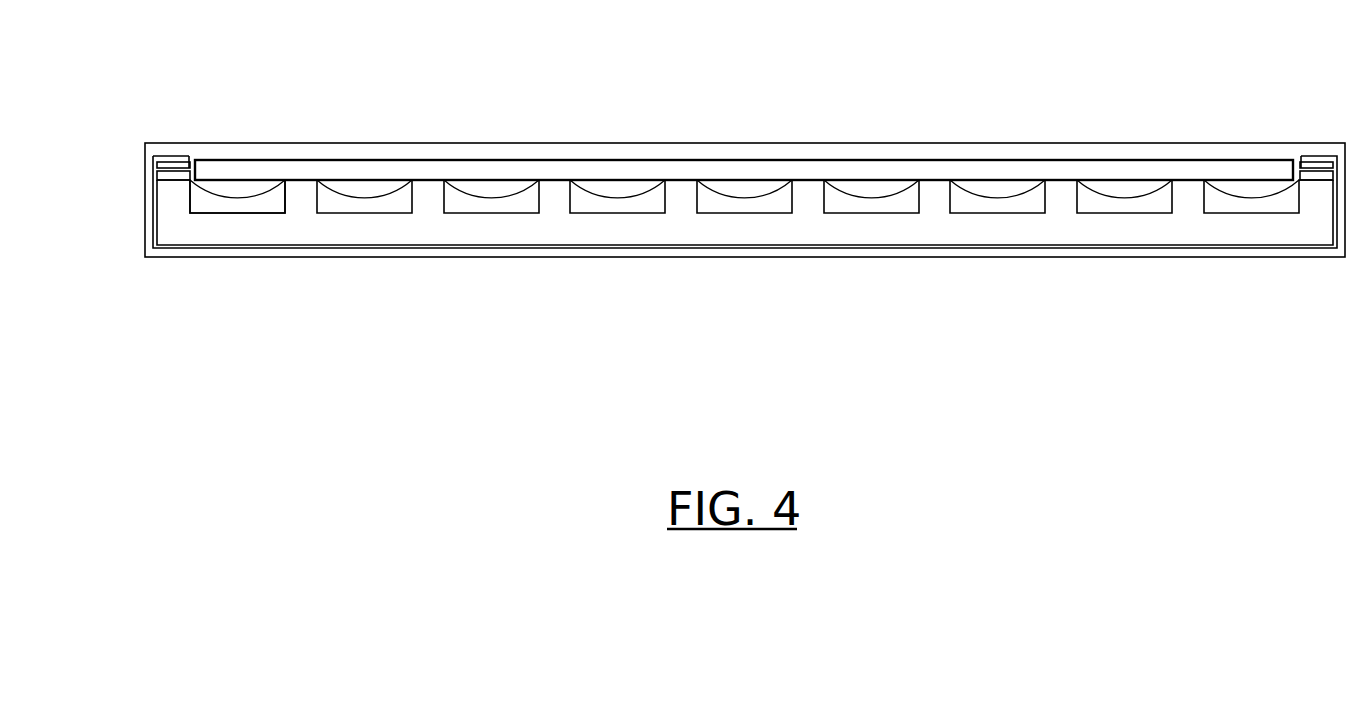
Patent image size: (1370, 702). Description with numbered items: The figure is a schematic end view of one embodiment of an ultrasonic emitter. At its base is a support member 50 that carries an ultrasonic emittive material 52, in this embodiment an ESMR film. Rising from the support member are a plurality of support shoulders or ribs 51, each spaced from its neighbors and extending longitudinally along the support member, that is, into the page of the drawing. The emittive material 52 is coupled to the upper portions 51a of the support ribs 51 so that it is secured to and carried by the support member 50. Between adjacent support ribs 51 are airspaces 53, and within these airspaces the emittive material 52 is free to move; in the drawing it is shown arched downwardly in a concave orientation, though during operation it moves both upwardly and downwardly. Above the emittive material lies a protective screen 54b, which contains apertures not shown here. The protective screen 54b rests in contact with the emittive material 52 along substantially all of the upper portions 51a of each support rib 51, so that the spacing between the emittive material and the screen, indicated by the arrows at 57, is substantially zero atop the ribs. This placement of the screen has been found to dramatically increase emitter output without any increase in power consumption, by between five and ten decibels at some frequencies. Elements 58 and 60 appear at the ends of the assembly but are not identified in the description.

The support member 50 is at (487, 233).
The support ribs 51 is at (313, 188).
The upper portions of support ribs 51a is at (555, 183).
The ultrasonic emittive material 52 is at (208, 192).
The airspaces 53 is at (273, 205).
The protective screen 54b is at (668, 160).
The spacing between emittive material and protective screen 57 is at (300, 260).
The lower clamp member 58 is at (158, 174).
The upper clamp member 60 is at (158, 164).